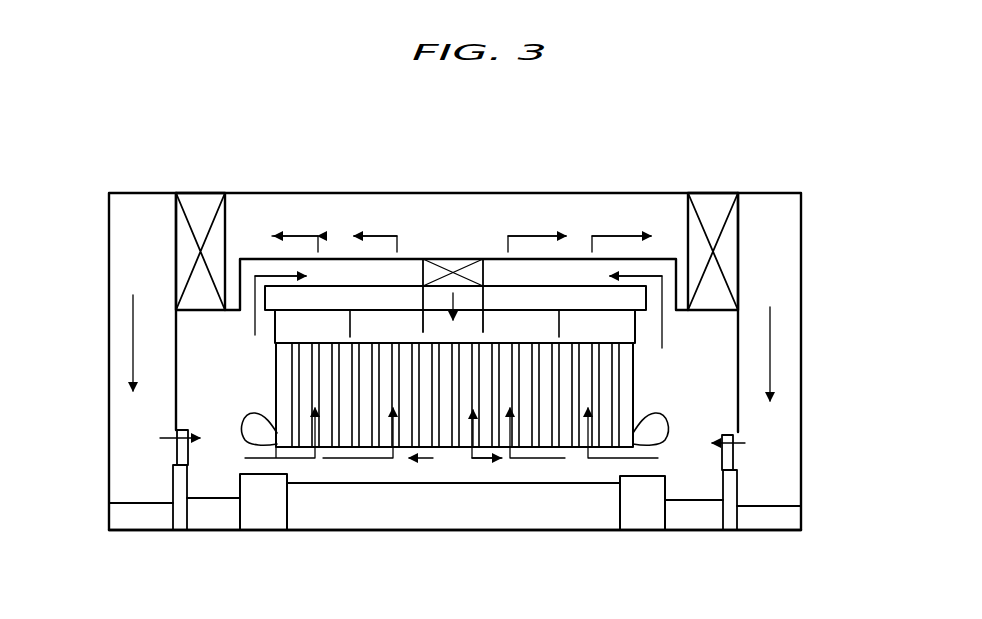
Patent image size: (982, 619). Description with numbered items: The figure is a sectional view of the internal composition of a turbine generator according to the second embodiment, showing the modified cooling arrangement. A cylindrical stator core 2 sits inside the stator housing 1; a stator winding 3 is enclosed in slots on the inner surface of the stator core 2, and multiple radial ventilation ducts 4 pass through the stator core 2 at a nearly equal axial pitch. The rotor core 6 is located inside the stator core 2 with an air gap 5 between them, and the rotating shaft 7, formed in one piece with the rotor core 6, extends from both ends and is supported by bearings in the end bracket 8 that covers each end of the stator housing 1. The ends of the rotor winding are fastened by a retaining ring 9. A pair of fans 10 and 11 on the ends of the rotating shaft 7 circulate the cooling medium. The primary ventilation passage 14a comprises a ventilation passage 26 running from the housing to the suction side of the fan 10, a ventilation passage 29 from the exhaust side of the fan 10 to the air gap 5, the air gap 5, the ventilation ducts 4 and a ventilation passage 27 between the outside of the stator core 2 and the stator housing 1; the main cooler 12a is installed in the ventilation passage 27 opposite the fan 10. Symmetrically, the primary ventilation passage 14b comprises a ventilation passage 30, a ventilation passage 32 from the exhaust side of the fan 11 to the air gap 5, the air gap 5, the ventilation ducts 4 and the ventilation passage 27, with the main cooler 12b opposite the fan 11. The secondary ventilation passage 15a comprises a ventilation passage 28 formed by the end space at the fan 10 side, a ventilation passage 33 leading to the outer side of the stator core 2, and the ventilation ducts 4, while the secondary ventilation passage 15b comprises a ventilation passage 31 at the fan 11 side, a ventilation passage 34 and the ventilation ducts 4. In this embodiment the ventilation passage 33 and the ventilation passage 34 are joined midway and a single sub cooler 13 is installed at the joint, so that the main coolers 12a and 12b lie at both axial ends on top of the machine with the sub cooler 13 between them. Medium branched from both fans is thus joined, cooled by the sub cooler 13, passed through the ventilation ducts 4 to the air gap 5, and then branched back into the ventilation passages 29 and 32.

The stator housing 1 is at (437, 200).
The stator core 2 is at (383, 320).
The stator winding 3 is at (245, 423).
The ventilation ducts 4 is at (462, 430).
The air gap 5 is at (377, 455).
The rotor core 6 is at (415, 503).
The rotating shaft 7 is at (143, 513).
The end bracket 8 is at (108, 252).
The retaining ring 9 is at (270, 510).
The fan 10 is at (177, 450).
The fan 11 is at (738, 460).
The main cooler 12a is at (205, 212).
The main cooler 12b is at (707, 217).
The sub cooler 13 is at (473, 270).
The primary ventilation passage 14a is at (137, 428).
The primary ventilation passage 14b is at (785, 295).
The secondary ventilation passage 15a is at (203, 344).
The secondary ventilation passage 15b is at (713, 398).
The ventilation passage 26 is at (125, 483).
The ventilation passage 27 is at (375, 210).
The ventilation passage 28 is at (197, 375).
The ventilation passage 29 is at (225, 467).
The ventilation passage 30 is at (775, 450).
The ventilation passage 31 is at (707, 357).
The ventilation passage 32 is at (703, 480).
The ventilation passage 33 is at (337, 263).
The ventilation passage 34 is at (567, 267).